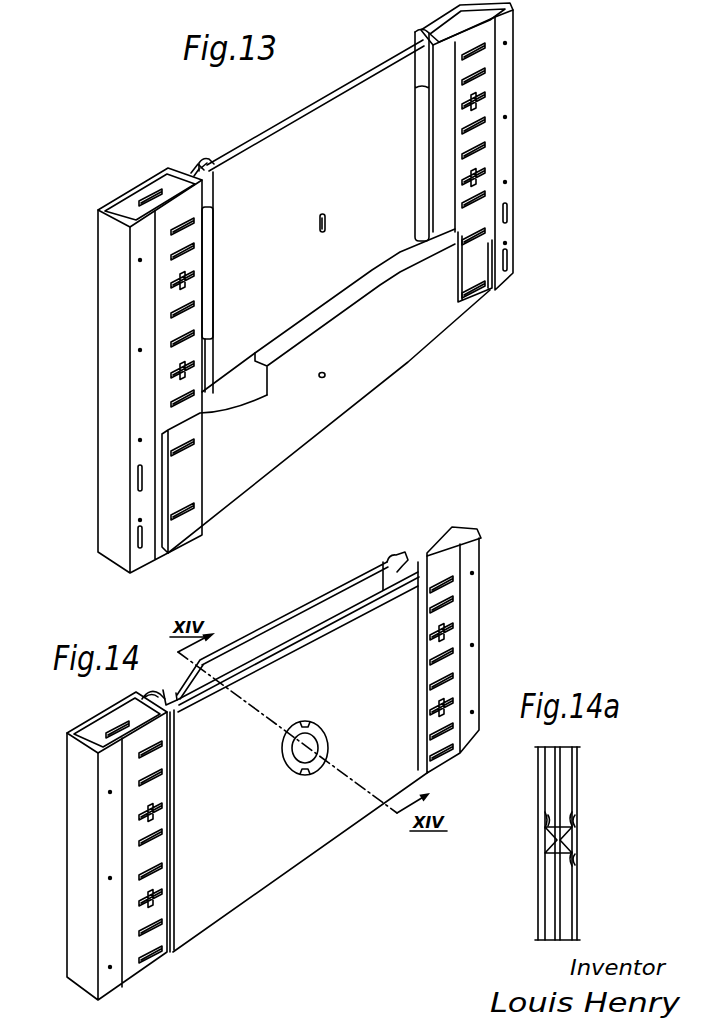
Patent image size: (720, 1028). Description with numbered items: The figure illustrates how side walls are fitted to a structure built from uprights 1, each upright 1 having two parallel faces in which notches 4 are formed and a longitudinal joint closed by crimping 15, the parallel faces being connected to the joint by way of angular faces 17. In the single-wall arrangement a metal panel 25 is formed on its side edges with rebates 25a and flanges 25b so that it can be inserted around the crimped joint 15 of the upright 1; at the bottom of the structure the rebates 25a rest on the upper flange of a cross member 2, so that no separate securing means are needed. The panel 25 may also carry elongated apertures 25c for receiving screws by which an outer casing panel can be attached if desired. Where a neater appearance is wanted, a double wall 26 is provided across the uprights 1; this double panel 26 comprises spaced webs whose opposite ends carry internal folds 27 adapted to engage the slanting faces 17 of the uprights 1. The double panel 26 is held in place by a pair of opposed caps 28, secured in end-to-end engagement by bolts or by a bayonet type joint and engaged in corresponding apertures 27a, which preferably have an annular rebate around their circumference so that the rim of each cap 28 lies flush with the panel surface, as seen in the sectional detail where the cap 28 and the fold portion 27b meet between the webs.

In FIG. 13, the upright 1 is at (112, 315).
In FIG. 14, the upright 1 is at (82, 783).
In FIG. 13, the cross member 2 is at (410, 344).
In FIG. 13, the notch 4 is at (175, 342).
In FIG. 14, the notch 4 is at (148, 845).
In FIG. 13, the crimping 15 is at (197, 164).
In FIG. 14, the angular face 17 is at (140, 697).
In FIG. 13, the metal panel 25 is at (323, 114).
In FIG. 13, the rebate 25a is at (214, 160).
In FIG. 13, the flange 25b is at (214, 259).
In FIG. 13, the elongated aperture 25c is at (327, 215).
In FIG. 14, the double wall 26 is at (329, 593).
In FIG. 14, the internal fold 27 is at (151, 691).
In FIG. 14A, the aperture 27a is at (571, 866).
In FIG. 14, the collar flange 27b is at (309, 723).
In FIG. 14A, the collar flange 27b is at (574, 813).
In FIG. 14, the cap 28 is at (328, 746).
In FIG. 14A, the cap 28 is at (545, 814).